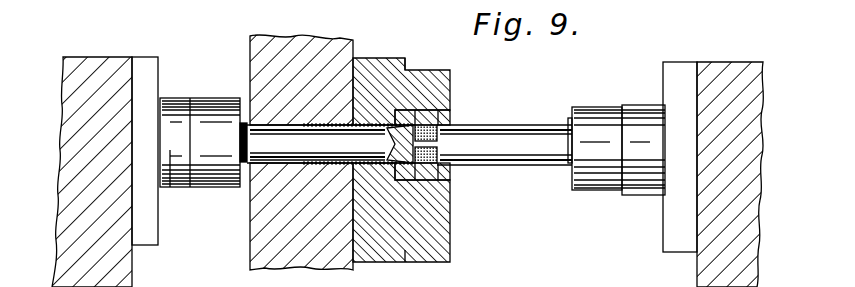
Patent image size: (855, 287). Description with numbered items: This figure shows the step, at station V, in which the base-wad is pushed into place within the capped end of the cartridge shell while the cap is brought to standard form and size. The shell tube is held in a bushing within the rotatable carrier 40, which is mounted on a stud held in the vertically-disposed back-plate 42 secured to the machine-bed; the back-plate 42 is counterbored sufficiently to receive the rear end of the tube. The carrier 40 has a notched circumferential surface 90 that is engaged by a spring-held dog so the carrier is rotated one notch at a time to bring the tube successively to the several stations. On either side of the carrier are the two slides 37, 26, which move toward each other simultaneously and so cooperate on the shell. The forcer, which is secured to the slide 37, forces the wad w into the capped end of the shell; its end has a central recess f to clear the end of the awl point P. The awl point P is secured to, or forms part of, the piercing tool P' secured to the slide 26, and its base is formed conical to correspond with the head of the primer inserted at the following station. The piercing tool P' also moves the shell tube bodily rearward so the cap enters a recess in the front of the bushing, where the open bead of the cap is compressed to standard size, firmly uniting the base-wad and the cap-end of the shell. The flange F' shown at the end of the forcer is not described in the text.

The slide 37 is at (113, 62).
The station V is at (200, 105).
The flange F' is at (224, 177).
The back-plate 42 is at (250, 249).
The notched circumferential surface 90 is at (378, 57).
The carrier 40 is at (434, 255).
The central recess f is at (417, 100).
The wad w is at (450, 223).
The awl point P is at (364, 113).
The piercing tool P' is at (504, 126).
The slide 26 is at (732, 68).